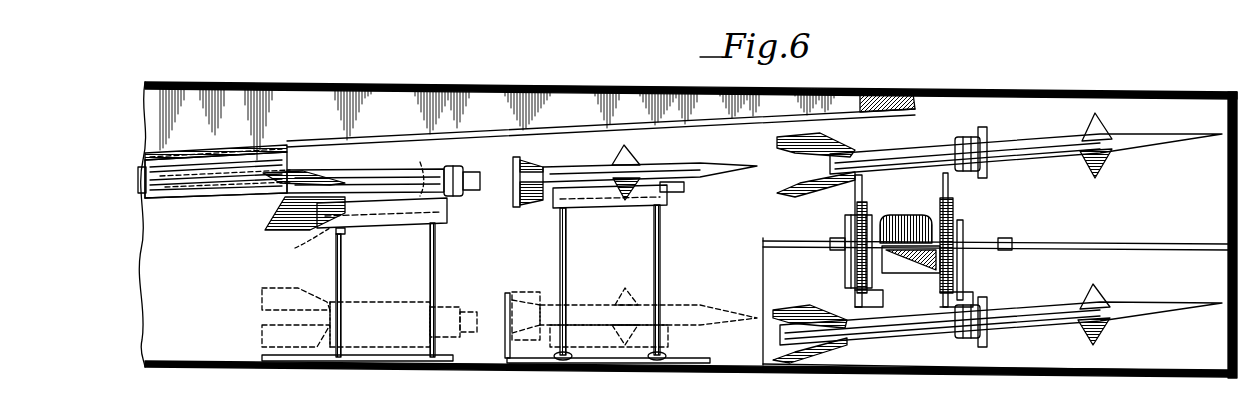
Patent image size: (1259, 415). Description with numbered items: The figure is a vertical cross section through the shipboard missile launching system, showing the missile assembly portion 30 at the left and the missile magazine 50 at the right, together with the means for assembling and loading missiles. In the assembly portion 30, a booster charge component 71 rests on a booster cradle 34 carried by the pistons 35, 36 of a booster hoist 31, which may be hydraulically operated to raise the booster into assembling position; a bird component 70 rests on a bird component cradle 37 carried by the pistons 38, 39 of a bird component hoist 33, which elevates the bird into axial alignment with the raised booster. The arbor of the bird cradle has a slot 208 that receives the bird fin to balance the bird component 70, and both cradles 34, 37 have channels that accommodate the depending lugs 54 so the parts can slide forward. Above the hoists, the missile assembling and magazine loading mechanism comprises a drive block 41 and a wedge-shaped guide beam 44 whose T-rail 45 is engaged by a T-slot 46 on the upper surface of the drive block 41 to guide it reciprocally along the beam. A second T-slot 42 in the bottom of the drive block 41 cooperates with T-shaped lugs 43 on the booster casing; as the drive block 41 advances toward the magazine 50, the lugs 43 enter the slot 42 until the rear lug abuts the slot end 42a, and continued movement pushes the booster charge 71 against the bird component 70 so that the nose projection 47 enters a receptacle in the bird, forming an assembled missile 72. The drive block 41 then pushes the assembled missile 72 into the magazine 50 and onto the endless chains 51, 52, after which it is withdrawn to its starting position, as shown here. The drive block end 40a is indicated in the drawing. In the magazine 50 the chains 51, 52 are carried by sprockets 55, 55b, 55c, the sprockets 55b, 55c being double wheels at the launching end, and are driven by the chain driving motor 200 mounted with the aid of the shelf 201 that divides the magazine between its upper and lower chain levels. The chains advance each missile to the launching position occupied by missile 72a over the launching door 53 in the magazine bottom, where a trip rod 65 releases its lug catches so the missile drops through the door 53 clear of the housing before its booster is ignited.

The missile assembly portion 30 is at (218, 318).
The booster hoist 31 is at (381, 279).
The bird component hoist 33 is at (615, 274).
The booster cradle 34 is at (383, 223).
The piston 35 is at (342, 286).
The piston 36 is at (437, 279).
The bird component cradle 37 is at (592, 208).
The piston 38 is at (557, 263).
The piston 39 is at (655, 263).
The rail end portion 40a is at (172, 213).
The drive block 41 is at (208, 200).
The T-slot 42 is at (258, 185).
The end of the slot 42a is at (168, 200).
The T-shaped lugs 43 is at (335, 182).
The guide beam 44 is at (470, 104).
The T-rail 45 is at (585, 122).
The T-slot 46 is at (290, 150).
The nose projection 47 is at (478, 176).
The missile magazine 50 is at (920, 350).
The endless chain 51 is at (957, 209).
The endless chain 52 is at (855, 207).
The launching door 53 is at (1062, 372).
The depending lugs 54 is at (348, 202).
The sprocket 55 is at (858, 267).
The sprocket 55b is at (955, 213).
The sprocket 55c is at (955, 279).
The rod 65 is at (960, 301).
The bird component 70 is at (676, 170).
The booster charge component 71 is at (430, 182).
The assembled missile 72 is at (1118, 132).
The missile in launching position 72a is at (1030, 330).
The chain driving motor 200 is at (898, 218).
The shelf 201 is at (1147, 244).
The slot 208 is at (686, 188).